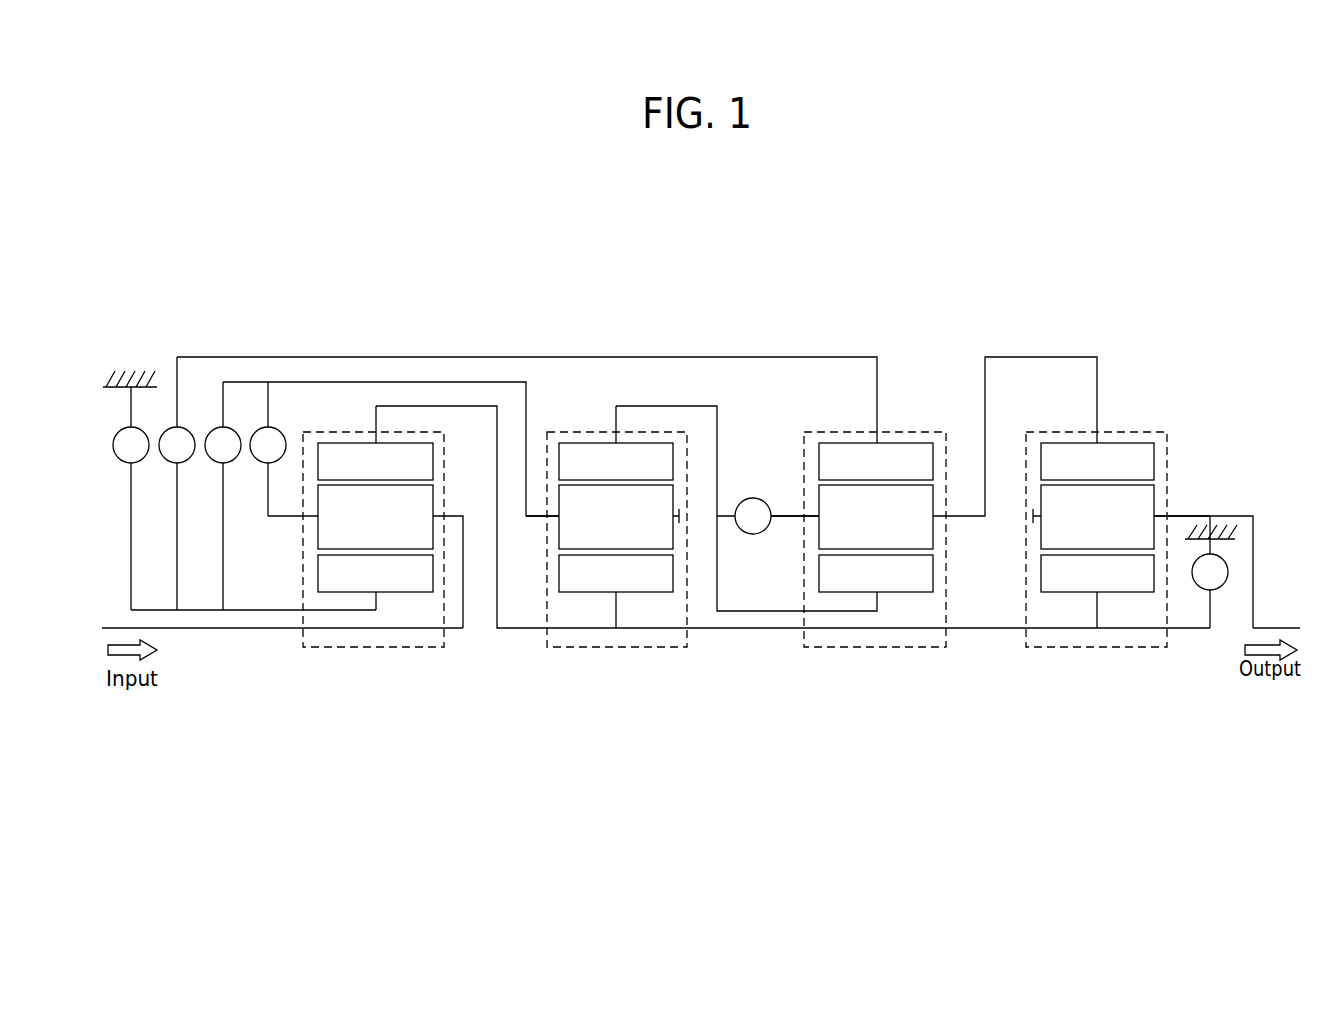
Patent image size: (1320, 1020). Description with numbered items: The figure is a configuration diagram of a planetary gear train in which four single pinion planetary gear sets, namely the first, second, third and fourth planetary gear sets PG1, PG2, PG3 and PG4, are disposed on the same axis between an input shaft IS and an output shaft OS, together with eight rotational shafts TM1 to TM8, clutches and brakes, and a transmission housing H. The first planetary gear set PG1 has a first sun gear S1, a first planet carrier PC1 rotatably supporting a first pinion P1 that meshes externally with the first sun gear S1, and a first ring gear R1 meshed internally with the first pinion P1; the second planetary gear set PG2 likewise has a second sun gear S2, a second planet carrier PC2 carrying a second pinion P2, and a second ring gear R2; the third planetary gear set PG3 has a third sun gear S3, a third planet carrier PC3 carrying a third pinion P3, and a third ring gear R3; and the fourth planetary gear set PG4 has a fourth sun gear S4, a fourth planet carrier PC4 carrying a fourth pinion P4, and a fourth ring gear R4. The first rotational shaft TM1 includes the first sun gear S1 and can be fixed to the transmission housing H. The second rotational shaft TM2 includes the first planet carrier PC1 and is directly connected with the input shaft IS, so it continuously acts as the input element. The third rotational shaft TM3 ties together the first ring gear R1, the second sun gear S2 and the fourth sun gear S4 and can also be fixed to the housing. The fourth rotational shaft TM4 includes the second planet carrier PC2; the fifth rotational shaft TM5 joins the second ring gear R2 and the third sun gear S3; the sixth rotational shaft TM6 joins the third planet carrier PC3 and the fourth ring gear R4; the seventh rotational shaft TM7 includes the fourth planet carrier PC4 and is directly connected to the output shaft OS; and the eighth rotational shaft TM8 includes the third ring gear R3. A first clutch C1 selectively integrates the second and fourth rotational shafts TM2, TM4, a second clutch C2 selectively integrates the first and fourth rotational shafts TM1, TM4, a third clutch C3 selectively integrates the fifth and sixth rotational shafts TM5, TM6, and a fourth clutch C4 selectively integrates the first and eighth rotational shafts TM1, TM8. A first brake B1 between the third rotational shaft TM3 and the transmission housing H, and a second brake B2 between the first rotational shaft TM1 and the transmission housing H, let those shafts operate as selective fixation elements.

The transmission housing H is at (136, 372).
The input shaft IS is at (190, 630).
The output shaft OS is at (1268, 627).
The first planetary gear set PG1 is at (378, 660).
The second planetary gear set PG2 is at (622, 660).
The third planetary gear set PG3 is at (879, 660).
The fourth planetary gear set PG4 is at (1096, 660).
The first sun gear S1 is at (375, 582).
The second sun gear S2 is at (616, 591).
The third sun gear S3 is at (876, 573).
The fourth sun gear S4 is at (1097, 591).
The first pinion P1 is at (375, 517).
The second pinion P2 is at (619, 517).
The third pinion P3 is at (876, 517).
The fourth pinion P4 is at (1093, 517).
The first ring gear R1 is at (375, 443).
The second ring gear R2 is at (616, 443).
The third ring gear R3 is at (876, 461).
The fourth ring gear R4 is at (1097, 461).
The first planet carrier PC1 is at (288, 518).
The second planet carrier PC2 is at (536, 518).
The third planet carrier PC3 is at (791, 518).
The fourth planet carrier PC4 is at (1160, 505).
The first rotational shaft TM1 is at (264, 625).
The second rotational shaft TM2 is at (470, 582).
The third rotational shaft TM3 is at (432, 396).
The fourth rotational shaft TM4 is at (499, 372).
The fifth rotational shaft TM5 is at (724, 419).
The sixth rotational shaft TM6 is at (1037, 347).
The seventh rotational shaft TM7 is at (1262, 532).
The eighth rotational shaft TM8 is at (822, 347).
The first clutch C1 is at (268, 449).
The second clutch C2 is at (223, 496).
The third clutch C3 is at (768, 516).
The fourth clutch C4 is at (177, 483).
The first brake B1 is at (1210, 583).
The second brake B2 is at (131, 518).